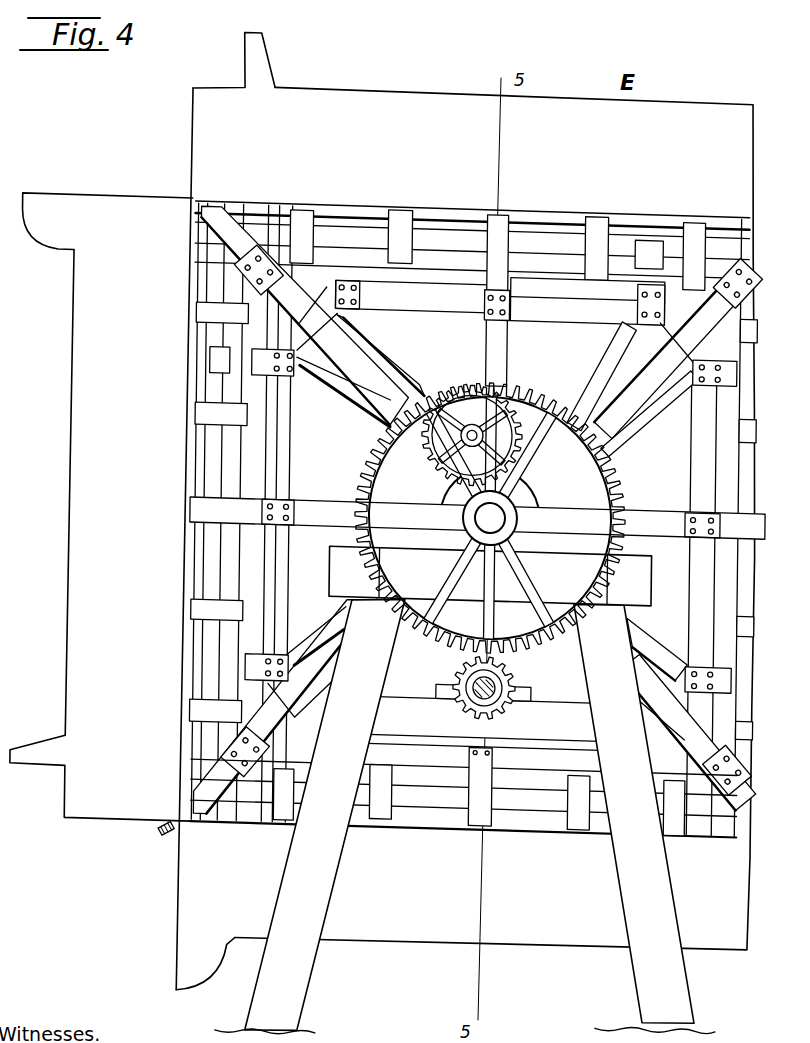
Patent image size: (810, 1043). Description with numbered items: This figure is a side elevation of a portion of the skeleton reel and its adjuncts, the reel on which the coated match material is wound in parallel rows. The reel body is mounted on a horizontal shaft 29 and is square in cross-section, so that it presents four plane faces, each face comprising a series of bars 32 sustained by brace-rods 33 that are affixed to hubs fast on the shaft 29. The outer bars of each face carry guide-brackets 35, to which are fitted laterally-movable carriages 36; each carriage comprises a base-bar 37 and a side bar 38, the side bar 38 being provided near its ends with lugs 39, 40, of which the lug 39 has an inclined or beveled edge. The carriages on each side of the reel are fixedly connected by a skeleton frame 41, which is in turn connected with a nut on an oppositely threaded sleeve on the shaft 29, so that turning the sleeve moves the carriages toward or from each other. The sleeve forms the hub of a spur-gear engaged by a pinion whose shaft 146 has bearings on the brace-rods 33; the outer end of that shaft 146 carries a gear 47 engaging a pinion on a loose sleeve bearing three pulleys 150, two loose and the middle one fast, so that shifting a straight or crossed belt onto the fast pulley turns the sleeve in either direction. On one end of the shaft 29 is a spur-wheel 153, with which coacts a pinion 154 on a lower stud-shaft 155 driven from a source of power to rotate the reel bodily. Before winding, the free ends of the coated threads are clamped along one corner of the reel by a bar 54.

The horizontal shaft 29 is at (480, 523).
The bars 32 is at (401, 265).
The brace-rods 33 is at (364, 384).
The guide-brackets 35 is at (300, 247).
The carriages 36 is at (187, 206).
The base-bar 37 is at (252, 213).
The side bar 38 is at (476, 282).
The lug 39 is at (268, 79).
The lug 40 is at (46, 218).
The skeleton frame 41 is at (285, 512).
The gear 47 is at (439, 427).
The bar 54 is at (177, 839).
The shaft 146 is at (462, 449).
The pulleys 150 is at (544, 500).
The spur-wheel 153 is at (536, 389).
The pinion 154 is at (504, 707).
The stud-shaft 155 is at (504, 686).